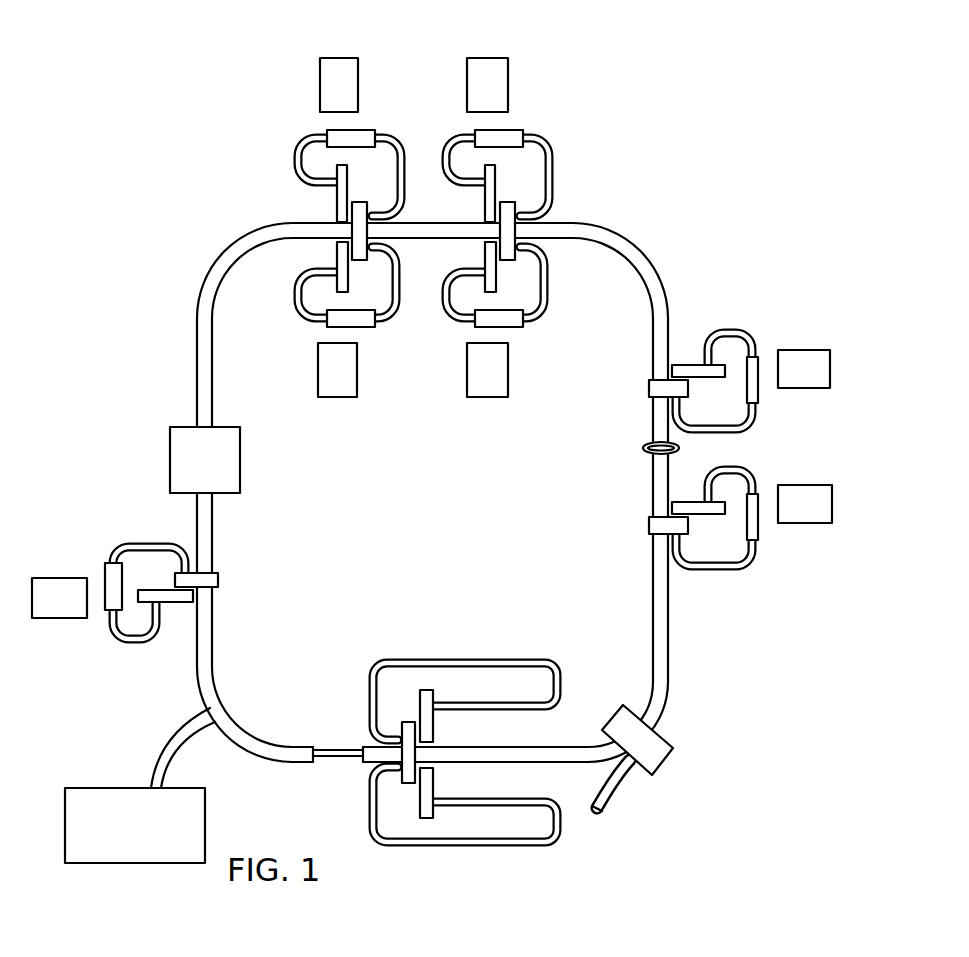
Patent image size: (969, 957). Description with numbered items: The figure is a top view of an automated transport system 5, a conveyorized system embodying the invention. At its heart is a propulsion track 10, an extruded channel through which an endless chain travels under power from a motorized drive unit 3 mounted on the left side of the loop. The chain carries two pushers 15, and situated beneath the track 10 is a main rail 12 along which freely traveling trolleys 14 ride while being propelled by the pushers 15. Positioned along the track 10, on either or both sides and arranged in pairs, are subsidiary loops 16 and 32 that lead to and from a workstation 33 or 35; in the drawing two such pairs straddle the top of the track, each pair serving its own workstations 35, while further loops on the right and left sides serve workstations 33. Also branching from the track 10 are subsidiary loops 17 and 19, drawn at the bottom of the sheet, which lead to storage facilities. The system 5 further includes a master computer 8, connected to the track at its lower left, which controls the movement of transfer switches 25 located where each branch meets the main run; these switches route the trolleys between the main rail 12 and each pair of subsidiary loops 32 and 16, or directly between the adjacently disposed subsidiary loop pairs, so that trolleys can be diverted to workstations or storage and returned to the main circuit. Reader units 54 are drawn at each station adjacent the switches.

The motorized drive unit 3 is at (240, 457).
The automated transport system 5 is at (630, 200).
The master computer 8 is at (205, 808).
The propulsion track 10 is at (197, 353).
The main rail 12 is at (336, 758).
The trolley 14 is at (680, 449).
The pusher 15 is at (645, 447).
The subsidiary loop 16 is at (394, 133).
The subsidiary loop 17 is at (509, 658).
The subsidiary loop 19 is at (528, 848).
The transfer switch 25 is at (364, 262).
The subsidiary loop 32 is at (385, 320).
The workstation 33 is at (800, 350).
The workstation 35 is at (345, 58).
The reader unit 54 is at (348, 184).